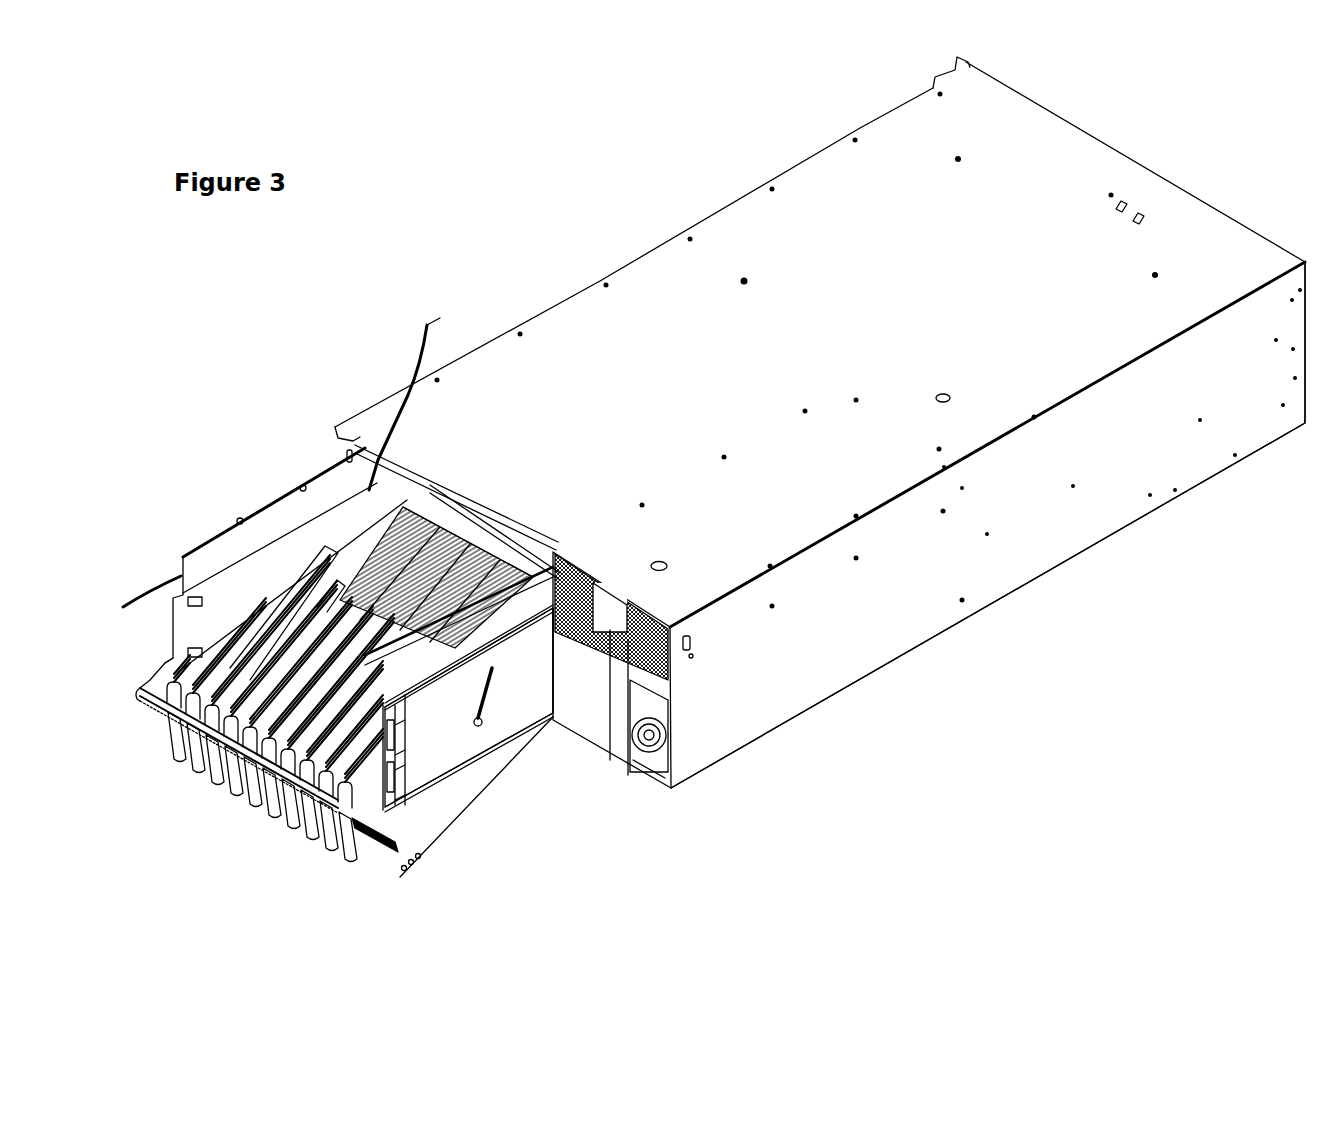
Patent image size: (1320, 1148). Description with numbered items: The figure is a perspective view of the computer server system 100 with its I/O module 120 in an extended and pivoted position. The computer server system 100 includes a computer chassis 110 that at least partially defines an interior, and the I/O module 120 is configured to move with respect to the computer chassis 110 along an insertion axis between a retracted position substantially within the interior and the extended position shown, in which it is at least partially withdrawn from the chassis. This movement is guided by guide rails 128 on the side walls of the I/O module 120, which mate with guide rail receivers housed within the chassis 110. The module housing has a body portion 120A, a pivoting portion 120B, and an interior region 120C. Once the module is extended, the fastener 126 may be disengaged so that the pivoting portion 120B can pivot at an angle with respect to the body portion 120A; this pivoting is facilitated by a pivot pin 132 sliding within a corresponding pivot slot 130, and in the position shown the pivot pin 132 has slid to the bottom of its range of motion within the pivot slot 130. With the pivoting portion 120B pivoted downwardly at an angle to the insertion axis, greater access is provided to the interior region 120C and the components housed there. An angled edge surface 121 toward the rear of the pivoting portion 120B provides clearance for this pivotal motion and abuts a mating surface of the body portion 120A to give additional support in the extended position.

The computer server system 100 is at (1006, 667).
The computer chassis 110 is at (1087, 552).
The I/O module 120 is at (216, 492).
The body portion 120A is at (444, 735).
The pivoting portion 120B is at (408, 838).
The interior region 120C is at (237, 787).
The angled edge surface 121 is at (412, 389).
The fastener 126 is at (277, 897).
The guide rail 128 is at (667, 694).
The pivot slot 130 is at (492, 687).
The pivot pin 132 is at (478, 723).